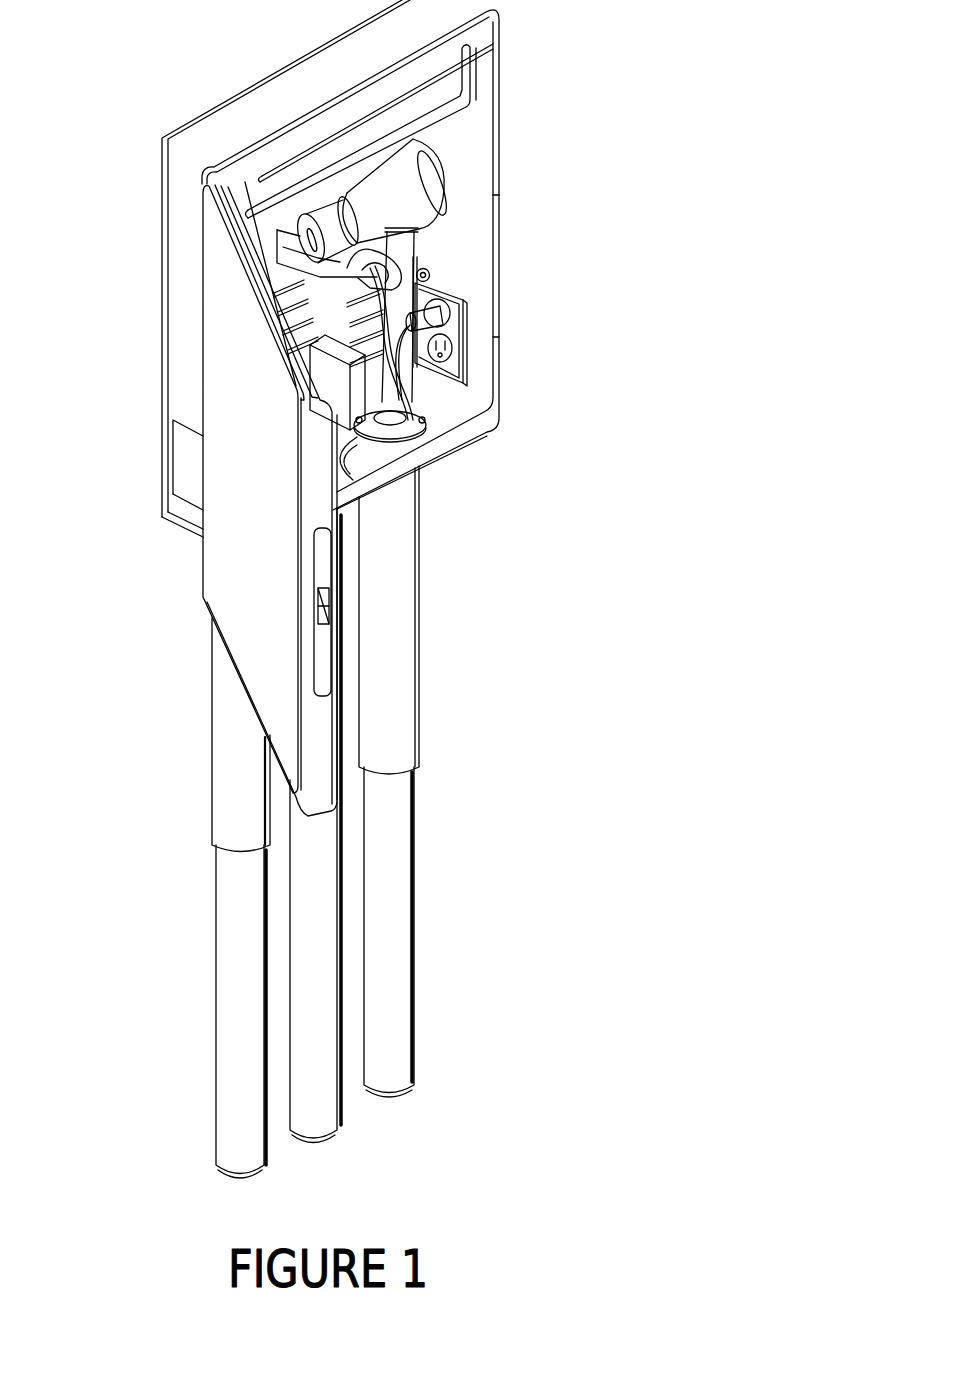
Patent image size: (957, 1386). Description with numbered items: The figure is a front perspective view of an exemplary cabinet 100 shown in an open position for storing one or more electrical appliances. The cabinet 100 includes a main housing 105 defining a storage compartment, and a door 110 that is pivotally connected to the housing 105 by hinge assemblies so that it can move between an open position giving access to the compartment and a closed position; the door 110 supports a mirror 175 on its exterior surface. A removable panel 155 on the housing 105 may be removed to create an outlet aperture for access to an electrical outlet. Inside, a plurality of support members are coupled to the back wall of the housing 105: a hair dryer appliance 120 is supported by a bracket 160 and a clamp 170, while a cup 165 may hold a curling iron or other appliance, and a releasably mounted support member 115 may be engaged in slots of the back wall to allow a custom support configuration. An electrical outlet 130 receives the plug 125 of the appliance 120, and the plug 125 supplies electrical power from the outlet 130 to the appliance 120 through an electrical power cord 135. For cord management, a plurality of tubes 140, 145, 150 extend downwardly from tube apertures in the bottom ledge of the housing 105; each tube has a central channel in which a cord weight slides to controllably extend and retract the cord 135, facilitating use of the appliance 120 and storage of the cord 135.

The cabinet 100 is at (178, 557).
The main housing 105 is at (270, 103).
The door 110 is at (203, 183).
The releasably mounted support member 115 is at (408, 108).
The electrical appliance 120 is at (413, 203).
The plug 125 is at (445, 322).
The electrical outlet 130 is at (462, 382).
The electrical power cord 135 is at (415, 400).
The tube 140 is at (393, 992).
The tube 145 is at (310, 1113).
The tube 150 is at (230, 1140).
The removable panel 155 is at (183, 462).
The bracket 160 is at (322, 270).
The cup 165 is at (350, 420).
The clamp 170 is at (430, 268).
The mirror 175 is at (227, 588).